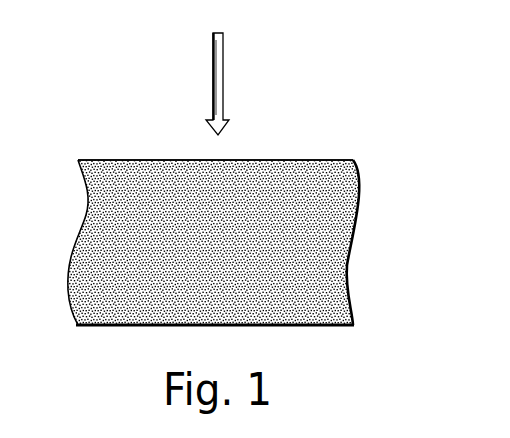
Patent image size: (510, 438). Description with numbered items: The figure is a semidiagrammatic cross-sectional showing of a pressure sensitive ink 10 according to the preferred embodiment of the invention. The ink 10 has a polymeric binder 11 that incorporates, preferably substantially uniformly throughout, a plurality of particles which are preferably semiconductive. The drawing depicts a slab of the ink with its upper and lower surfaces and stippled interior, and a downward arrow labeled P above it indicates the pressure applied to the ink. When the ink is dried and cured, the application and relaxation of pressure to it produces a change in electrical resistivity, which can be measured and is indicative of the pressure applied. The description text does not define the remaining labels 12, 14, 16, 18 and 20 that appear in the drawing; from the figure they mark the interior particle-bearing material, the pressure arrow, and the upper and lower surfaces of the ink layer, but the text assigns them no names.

The pressure sensitive ink 10 is at (351, 207).
The polymeric binder 11 is at (356, 292).
The matrix material 12 is at (277, 163).
The embedded particles 14 is at (175, 168).
The arrow indicating applied pressure P 16 is at (224, 62).
The upper surface 18 is at (121, 150).
The lower surface 20 is at (328, 338).